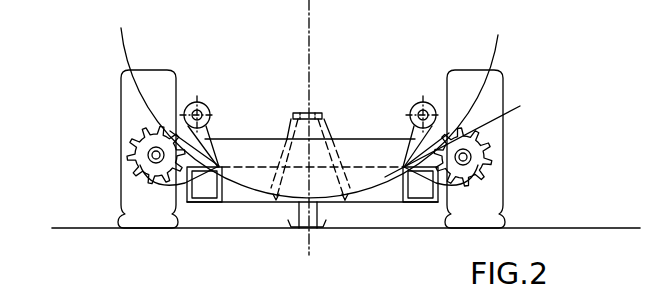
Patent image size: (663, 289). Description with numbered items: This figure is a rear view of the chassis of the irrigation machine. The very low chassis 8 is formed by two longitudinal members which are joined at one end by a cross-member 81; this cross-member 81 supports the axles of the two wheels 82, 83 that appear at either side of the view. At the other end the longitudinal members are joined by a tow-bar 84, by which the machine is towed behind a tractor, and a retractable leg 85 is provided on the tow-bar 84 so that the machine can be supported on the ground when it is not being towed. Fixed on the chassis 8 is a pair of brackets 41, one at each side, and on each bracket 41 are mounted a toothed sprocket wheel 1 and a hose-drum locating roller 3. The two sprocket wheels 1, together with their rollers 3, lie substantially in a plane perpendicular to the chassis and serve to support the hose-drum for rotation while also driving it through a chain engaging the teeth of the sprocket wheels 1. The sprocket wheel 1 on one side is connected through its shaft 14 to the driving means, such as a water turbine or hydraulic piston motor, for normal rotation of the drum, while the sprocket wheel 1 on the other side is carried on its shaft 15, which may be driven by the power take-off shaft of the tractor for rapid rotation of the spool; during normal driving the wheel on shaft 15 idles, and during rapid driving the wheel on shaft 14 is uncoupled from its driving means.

The toothed sprocket wheel 1 is at (140, 169).
The hose-drum locating roller 3 is at (203, 103).
The chassis 8 is at (253, 193).
The shaft 14 is at (149, 153).
The shaft 15 is at (469, 134).
The bracket 41 is at (212, 135).
The cross-member 81 is at (265, 148).
The wheel 82 is at (128, 218).
The wheel 83 is at (495, 218).
The tow-bar 84 is at (337, 117).
The retractable leg 85 is at (318, 208).